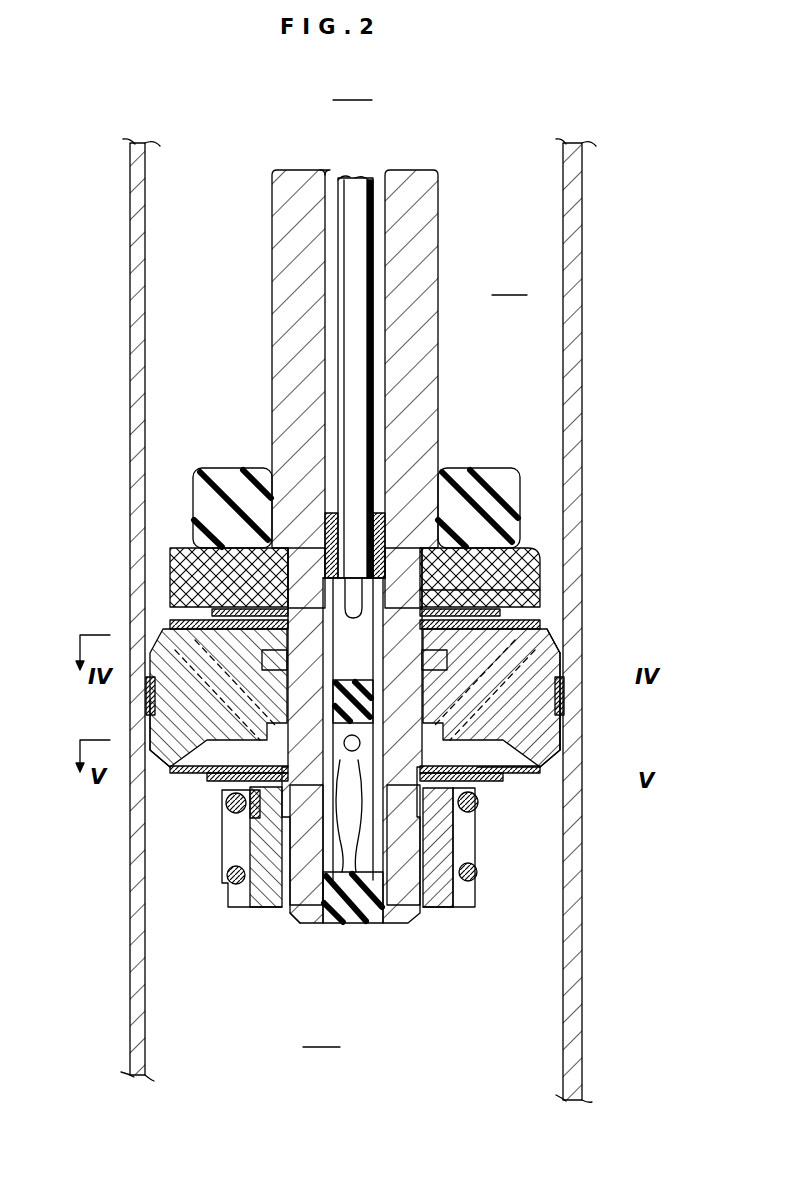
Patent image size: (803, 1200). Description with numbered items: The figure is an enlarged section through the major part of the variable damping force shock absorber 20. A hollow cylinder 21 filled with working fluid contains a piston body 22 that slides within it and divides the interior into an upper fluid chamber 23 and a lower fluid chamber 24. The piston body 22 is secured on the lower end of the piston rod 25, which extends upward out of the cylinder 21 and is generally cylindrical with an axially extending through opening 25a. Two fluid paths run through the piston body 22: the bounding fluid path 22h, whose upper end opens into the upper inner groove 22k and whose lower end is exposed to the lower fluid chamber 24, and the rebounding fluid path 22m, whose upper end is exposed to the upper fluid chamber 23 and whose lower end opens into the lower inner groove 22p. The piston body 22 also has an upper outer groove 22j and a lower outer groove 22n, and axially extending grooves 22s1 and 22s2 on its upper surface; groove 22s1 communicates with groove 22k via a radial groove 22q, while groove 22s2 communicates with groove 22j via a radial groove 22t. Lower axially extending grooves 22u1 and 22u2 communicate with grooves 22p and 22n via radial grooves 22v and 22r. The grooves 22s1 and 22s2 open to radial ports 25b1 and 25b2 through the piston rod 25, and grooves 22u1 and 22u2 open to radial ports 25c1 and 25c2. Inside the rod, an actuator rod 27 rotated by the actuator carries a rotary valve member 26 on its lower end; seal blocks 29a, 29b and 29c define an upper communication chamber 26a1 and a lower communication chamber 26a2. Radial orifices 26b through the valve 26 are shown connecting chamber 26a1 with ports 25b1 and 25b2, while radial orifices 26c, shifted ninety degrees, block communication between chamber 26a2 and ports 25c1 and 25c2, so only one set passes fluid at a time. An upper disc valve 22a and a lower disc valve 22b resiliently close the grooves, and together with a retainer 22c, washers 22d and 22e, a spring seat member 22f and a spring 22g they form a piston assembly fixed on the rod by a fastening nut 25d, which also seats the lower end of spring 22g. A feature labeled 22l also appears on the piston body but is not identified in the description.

The variable damping force shock absorber 20 is at (352, 89).
The hollow cylinder 21 is at (585, 205).
The piston body 22 is at (560, 690).
The upper disc valve 22a is at (520, 625).
The lower disc valve 22b is at (510, 775).
The retainer 22c is at (480, 580).
The washer 22d is at (480, 540).
The washer 22e is at (250, 800).
The spring seat member 22f is at (528, 823).
The spring 22g is at (470, 865).
The bounding fluid path 22h is at (565, 725).
The upper outer annular groove 22j is at (490, 610).
The upper inner annular groove 22k is at (560, 640).
The piston outer surface 22l is at (628, 672).
The rebounding fluid path 22m is at (230, 625).
The lower outer annular groove 22n is at (160, 745).
The lower inner annular groove 22p is at (230, 770).
The radial groove 22q is at (500, 595).
The radial groove 22r is at (628, 775).
The axially extending groove 22s1 is at (440, 660).
The axially extending groove 22s2 is at (268, 655).
The radial groove 22t is at (217, 474).
The axially extending groove 22u1 is at (146, 695).
The axially extending groove 22u2 is at (564, 712).
The radial groove 22v is at (226, 800).
The upper fluid chamber 23 is at (509, 284).
The lower fluid chamber 24 is at (321, 1036).
The piston rod 25 is at (444, 228).
The axially extending through opening 25a is at (328, 169).
The radial port 25b1 is at (440, 575).
The radial port 25b2 is at (300, 590).
The radial port 25c1 is at (300, 830).
The radial port 25c2 is at (425, 785).
The fastening nut 25d is at (290, 912).
The rotary valve member 26 is at (380, 858).
The upper communication chamber 26a1 is at (340, 905).
The lower communication chamber 26a2 is at (290, 910).
The radial orifices 26b is at (185, 565).
The radial orifices 26c is at (365, 915).
The actuator rod 27 is at (375, 180).
The seal block 29a is at (385, 520).
The seal block 29b is at (288, 905).
The seal block 29c is at (360, 870).